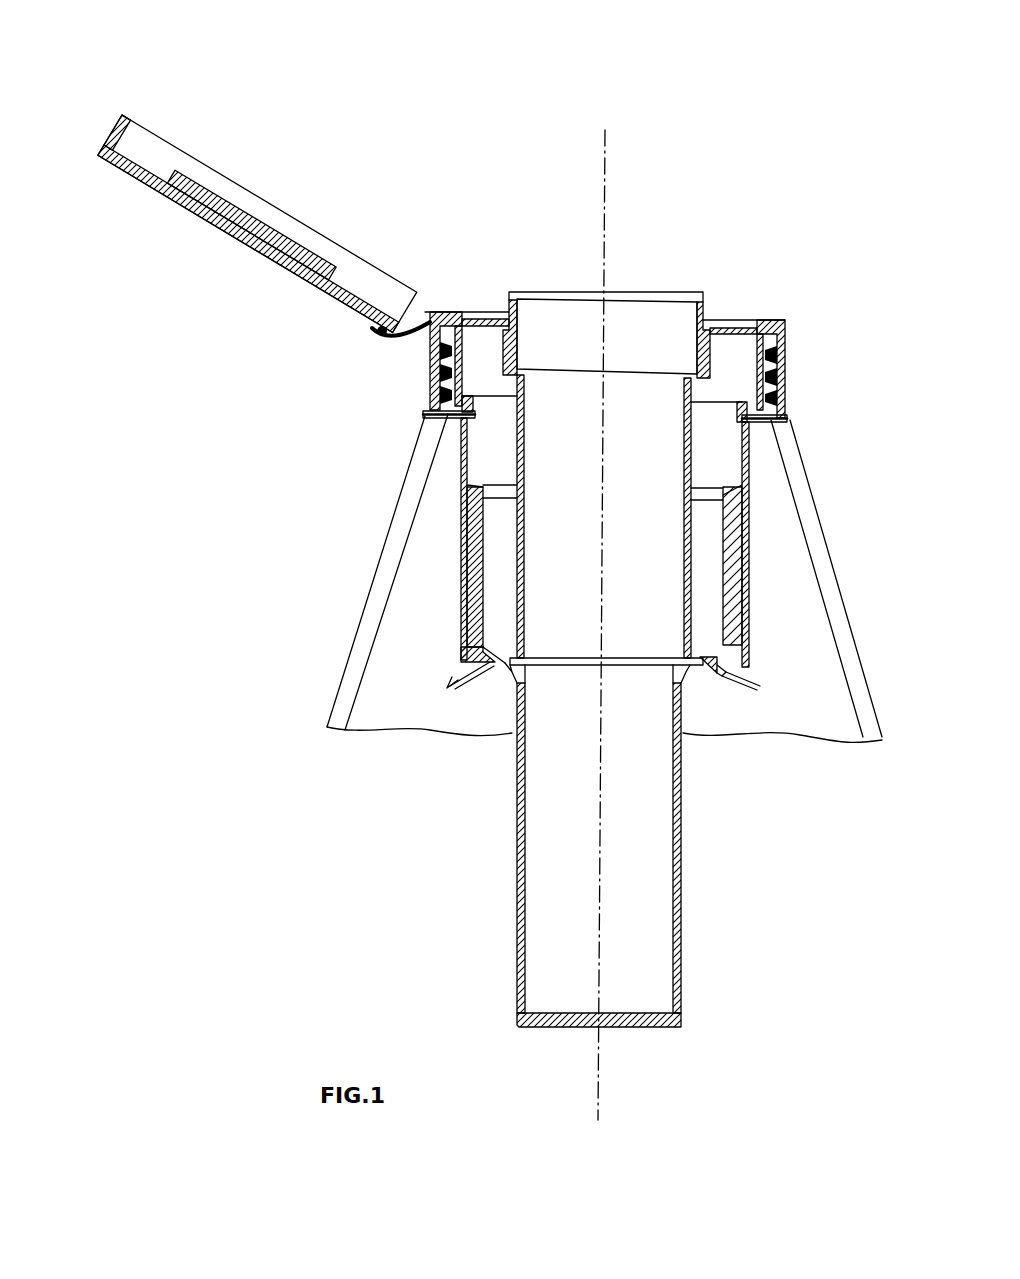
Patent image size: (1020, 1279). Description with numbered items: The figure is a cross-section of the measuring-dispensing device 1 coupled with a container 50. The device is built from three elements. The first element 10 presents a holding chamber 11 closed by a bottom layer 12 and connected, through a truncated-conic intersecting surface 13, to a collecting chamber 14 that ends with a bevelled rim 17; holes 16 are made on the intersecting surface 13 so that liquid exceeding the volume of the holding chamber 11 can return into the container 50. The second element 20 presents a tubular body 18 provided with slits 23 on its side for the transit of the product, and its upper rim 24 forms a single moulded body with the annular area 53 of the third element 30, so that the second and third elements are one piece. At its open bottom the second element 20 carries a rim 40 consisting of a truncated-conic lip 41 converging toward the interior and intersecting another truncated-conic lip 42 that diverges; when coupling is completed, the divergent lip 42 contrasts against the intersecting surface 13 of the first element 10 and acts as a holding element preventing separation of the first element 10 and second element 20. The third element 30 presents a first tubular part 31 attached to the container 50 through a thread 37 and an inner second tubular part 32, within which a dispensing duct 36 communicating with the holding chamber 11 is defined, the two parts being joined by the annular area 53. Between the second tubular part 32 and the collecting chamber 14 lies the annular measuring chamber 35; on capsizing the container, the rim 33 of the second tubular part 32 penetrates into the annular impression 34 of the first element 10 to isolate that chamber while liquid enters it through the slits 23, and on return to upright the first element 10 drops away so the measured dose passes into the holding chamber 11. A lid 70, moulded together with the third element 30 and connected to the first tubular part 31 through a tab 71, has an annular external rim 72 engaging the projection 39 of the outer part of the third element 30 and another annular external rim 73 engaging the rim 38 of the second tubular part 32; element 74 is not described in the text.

The measuring-dispensing device 1 is at (373, 100).
The first element 10 is at (693, 968).
The holding chamber 11 is at (518, 878).
The bottom layer 12 is at (558, 1020).
The truncated-conic intersecting surface 13 is at (507, 663).
The collecting chamber 14 is at (745, 553).
The holes 16 is at (487, 662).
The bevelled rim 17 is at (733, 482).
The tubular body 18 is at (460, 543).
The second element 20 is at (763, 620).
The slits 23 is at (455, 415).
The upper rim 24 is at (467, 312).
The third element 30 is at (800, 316).
The first tubular part 31 is at (447, 392).
The second tubular part 32 is at (525, 450).
The rim 33 is at (510, 670).
The annular impression 34 is at (680, 690).
The annular measuring chamber 35 is at (503, 583).
The dispensing duct 36 is at (642, 432).
The thread 37 is at (440, 380).
The rim 38 is at (505, 323).
The projection 39 is at (442, 312).
The rim 40 is at (727, 685).
The truncated-conic lip 41 is at (732, 683).
The truncated-conic lip 42 is at (748, 635).
The container 50 is at (415, 487).
The annular area 53 is at (490, 313).
The lid 70 is at (118, 183).
The tab 71 is at (395, 320).
The annular external rim 72 is at (135, 135).
The annular external rim 73 is at (183, 172).
The cap top 74 is at (775, 320).